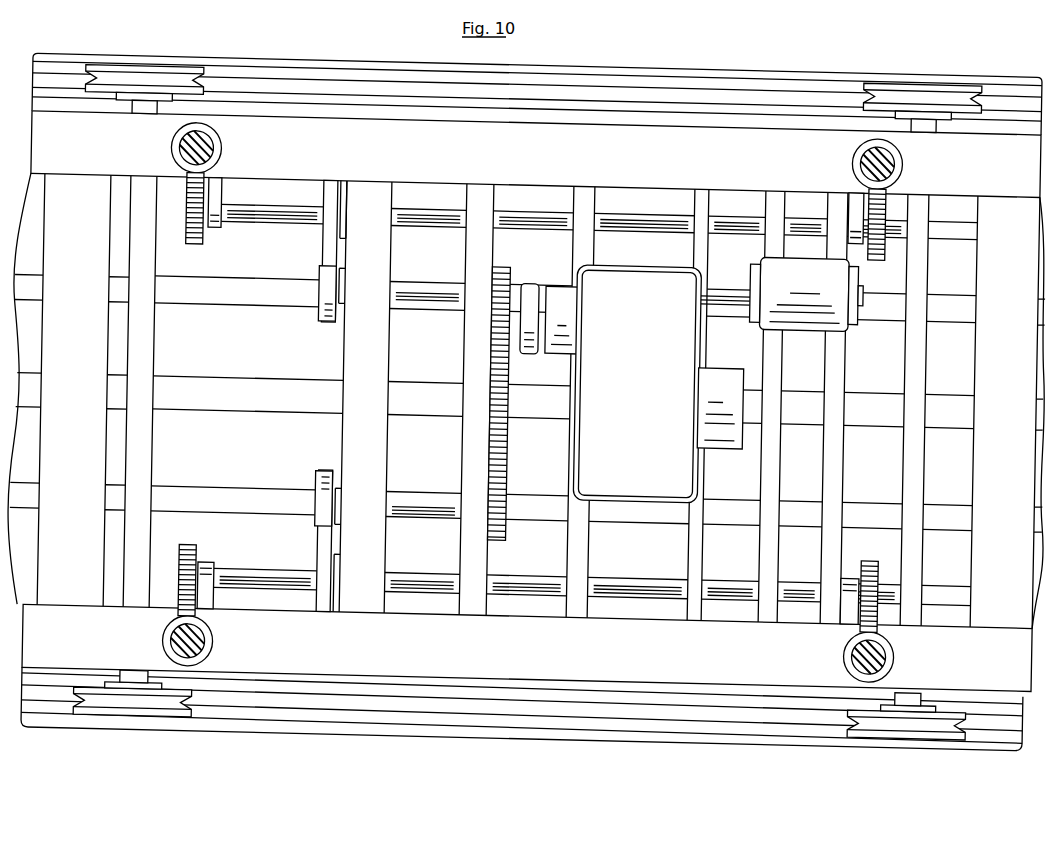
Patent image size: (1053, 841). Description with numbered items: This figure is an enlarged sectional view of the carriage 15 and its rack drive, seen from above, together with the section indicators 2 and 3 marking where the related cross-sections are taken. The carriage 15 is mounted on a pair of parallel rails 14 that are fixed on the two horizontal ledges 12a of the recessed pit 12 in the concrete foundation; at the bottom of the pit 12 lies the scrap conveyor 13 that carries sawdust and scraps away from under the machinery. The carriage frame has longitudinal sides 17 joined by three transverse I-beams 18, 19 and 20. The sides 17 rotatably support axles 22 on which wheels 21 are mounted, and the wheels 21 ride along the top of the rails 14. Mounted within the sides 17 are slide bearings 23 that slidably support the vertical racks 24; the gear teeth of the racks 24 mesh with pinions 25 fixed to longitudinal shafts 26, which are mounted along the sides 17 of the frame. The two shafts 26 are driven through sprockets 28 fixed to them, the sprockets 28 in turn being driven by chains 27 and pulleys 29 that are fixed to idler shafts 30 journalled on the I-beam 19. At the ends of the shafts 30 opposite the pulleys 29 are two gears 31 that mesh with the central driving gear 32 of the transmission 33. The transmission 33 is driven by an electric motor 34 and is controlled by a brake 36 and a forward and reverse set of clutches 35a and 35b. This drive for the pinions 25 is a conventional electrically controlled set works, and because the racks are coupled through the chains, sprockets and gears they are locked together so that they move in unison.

The section line 2- 2 is at (546, 141).
The section line 3- 3 is at (81, 498).
The recessed pit 12 is at (442, 254).
The horizontal ledges 12a is at (661, 54).
The scrap conveyor 13 is at (261, 352).
The rails 14 is at (750, 60).
The carriage 15 is at (34, 148).
The longitudinal sides 17 is at (358, 145).
The transverse I-beam 18 is at (78, 424).
The transverse I-beam 19 is at (380, 345).
The transverse I-beam 20 is at (1015, 390).
The wheels 21 is at (166, 68).
The axles 22 is at (154, 348).
The slide bearings 23 is at (221, 153).
The vertical racks 24 is at (188, 144).
The pinions 25 is at (200, 237).
The longitudinal shafts 26 is at (651, 204).
The chains 27 is at (335, 249).
The sprockets 28 is at (326, 225).
The pulleys 29 is at (328, 312).
The idler shafts 30 is at (438, 294).
The gears 31 is at (513, 260).
The central driving gear 32 is at (513, 443).
The transmission 33 is at (634, 434).
The electric motor 34 is at (815, 260).
The forward clutch 35a is at (720, 408).
The reverse clutch 35b is at (562, 320).
The brake 36 is at (537, 275).